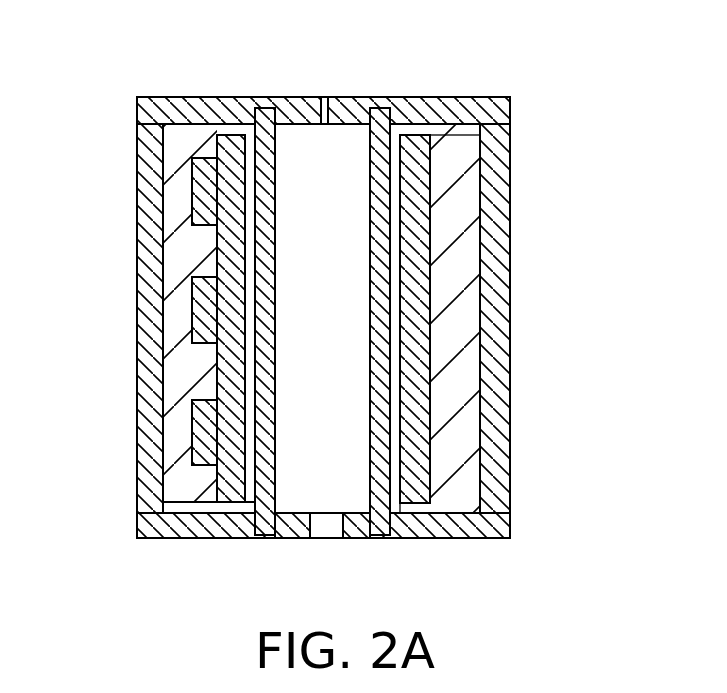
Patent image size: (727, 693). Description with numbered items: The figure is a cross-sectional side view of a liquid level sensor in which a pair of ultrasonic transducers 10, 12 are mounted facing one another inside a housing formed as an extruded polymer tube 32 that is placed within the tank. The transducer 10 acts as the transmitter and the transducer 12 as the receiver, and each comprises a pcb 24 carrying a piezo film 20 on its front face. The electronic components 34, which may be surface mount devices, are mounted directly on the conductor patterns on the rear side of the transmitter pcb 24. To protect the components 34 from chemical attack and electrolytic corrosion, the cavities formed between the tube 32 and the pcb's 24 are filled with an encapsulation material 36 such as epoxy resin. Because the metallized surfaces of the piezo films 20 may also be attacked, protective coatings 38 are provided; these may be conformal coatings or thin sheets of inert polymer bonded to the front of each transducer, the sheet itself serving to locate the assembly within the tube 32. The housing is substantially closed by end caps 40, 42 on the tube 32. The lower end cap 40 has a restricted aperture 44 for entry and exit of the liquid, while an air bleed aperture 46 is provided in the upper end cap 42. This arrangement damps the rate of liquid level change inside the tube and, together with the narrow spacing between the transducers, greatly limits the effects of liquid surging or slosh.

The ultrasonic transducer 10 is at (226, 110).
The ultrasonic transducer 12 is at (447, 483).
The piezo film 20 is at (247, 130).
The pcb 24 is at (227, 150).
The extruded polymer tube 32 is at (503, 112).
The electronic components 34 is at (190, 295).
The encapsulation material 36 is at (467, 218).
The protective coating 38 is at (273, 473).
The lower end cap 40 is at (235, 540).
The upper end cap 42 is at (428, 107).
The restricted aperture 44 is at (323, 536).
The air bleed aperture 46 is at (327, 97).